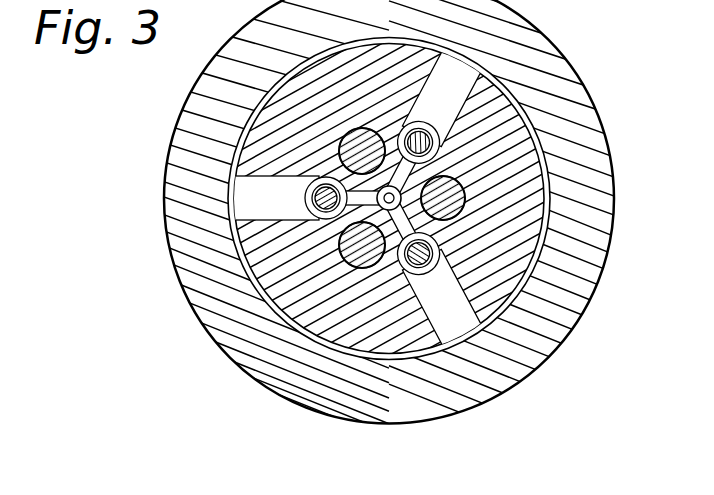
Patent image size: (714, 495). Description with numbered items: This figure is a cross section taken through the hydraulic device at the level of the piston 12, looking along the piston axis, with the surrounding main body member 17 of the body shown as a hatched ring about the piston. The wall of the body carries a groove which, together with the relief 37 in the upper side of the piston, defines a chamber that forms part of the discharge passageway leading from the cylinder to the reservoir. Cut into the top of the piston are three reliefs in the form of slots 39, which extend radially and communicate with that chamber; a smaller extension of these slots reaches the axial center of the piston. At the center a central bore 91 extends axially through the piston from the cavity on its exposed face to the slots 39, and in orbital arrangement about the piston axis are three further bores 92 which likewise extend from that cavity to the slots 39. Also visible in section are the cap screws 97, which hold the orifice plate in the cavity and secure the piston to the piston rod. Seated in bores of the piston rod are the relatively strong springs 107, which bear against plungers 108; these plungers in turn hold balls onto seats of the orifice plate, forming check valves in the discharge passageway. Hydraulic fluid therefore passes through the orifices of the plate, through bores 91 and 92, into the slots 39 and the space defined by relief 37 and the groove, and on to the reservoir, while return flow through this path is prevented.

The piston 12 is at (523, 162).
The main body member 17 is at (616, 173).
The relief 37 is at (240, 233).
The slots 39 is at (276, 208).
The central bore 91 is at (465, 192).
The bores 92 is at (438, 136).
The cap screws 97 is at (361, 150).
The springs 107 is at (446, 114).
The plungers 108 is at (428, 270).